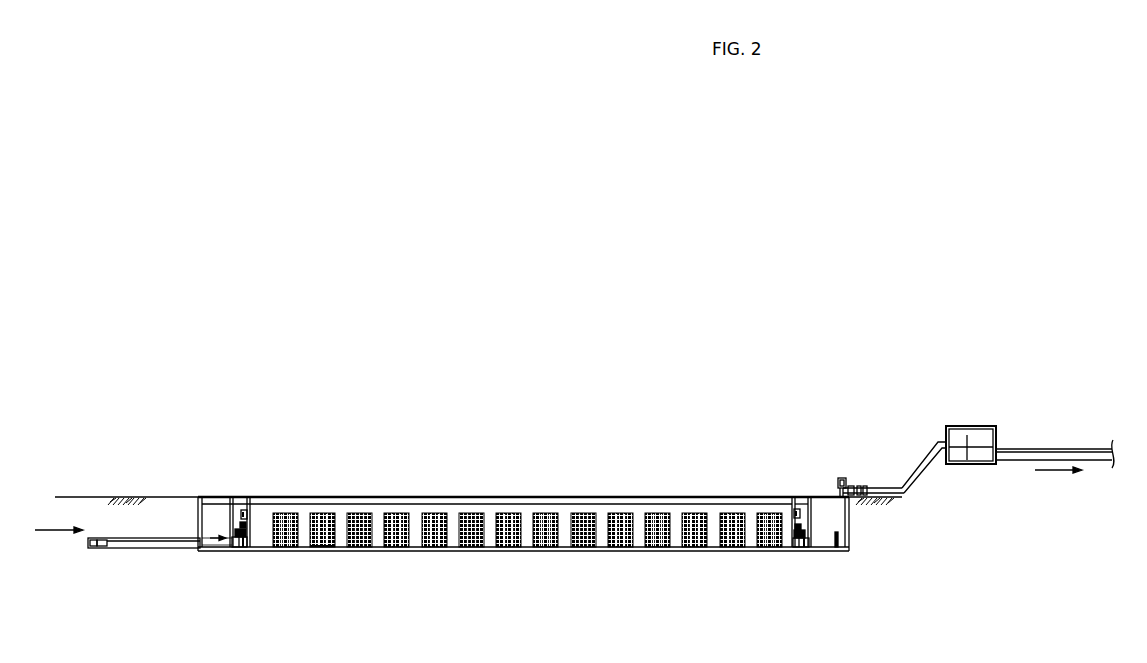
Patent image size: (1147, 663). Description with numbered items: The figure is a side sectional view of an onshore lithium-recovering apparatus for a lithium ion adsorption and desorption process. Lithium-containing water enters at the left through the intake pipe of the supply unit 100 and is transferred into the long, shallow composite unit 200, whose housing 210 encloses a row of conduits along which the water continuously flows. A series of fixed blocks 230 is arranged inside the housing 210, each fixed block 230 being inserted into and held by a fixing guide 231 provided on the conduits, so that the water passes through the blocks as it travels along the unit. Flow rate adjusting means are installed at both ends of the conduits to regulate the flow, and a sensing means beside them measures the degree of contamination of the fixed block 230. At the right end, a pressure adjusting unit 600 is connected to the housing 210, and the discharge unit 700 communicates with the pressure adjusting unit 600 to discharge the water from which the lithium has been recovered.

The supply unit 100 is at (113, 551).
The composite unit 200 is at (472, 497).
The housing 210 is at (260, 548).
The fixed block 230 is at (284, 548).
The fixing guide 231 is at (333, 548).
The pressure adjusting unit 600 is at (840, 551).
The discharge unit 700 is at (975, 426).